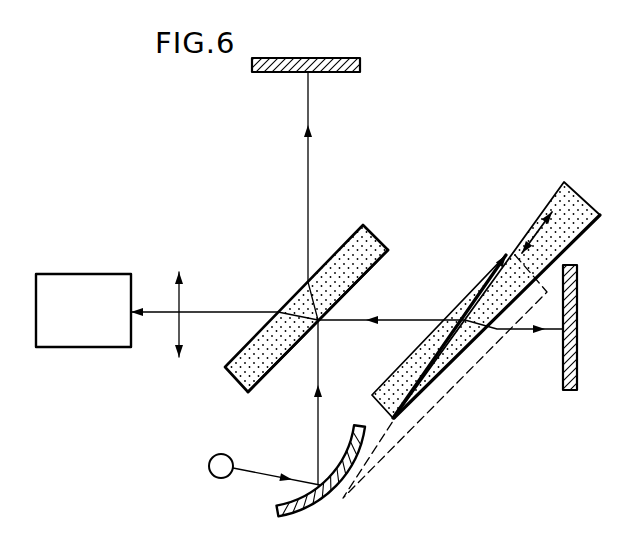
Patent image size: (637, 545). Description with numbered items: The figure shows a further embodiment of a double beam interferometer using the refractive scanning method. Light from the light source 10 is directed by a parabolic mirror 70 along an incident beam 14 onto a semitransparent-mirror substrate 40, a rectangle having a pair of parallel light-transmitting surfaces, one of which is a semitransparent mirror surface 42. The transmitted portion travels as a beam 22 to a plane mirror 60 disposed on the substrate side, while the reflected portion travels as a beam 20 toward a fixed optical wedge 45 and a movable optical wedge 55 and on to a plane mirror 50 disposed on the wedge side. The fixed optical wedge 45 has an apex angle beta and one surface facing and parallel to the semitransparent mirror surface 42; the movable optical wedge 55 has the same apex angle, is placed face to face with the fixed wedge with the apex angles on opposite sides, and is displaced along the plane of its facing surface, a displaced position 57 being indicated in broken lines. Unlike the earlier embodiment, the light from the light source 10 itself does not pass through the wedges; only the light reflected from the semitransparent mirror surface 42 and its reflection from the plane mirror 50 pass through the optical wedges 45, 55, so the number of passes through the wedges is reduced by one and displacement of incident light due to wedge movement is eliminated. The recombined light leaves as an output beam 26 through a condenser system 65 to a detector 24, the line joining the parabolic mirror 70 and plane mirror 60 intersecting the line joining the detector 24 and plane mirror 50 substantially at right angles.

The light source 10 is at (209, 464).
The incident light beam 14 is at (318, 414).
The measuring light beam 20 is at (422, 319).
The reference light beam 22 is at (308, 162).
The detector 24 is at (87, 272).
The output light beam 26 is at (235, 311).
The semitransparent-mirror substrate 40 is at (238, 381).
The semitransparent mirror surface 42 is at (380, 263).
The fixed optical wedge 45 is at (388, 388).
The plane mirror 50 is at (470, 374).
The movable optical wedge 55 is at (580, 208).
The displaced position of movable wedge 57 is at (445, 397).
The plane mirror 60 is at (272, 73).
The condenser system 65 is at (180, 300).
The parabolic mirror 70 is at (276, 506).